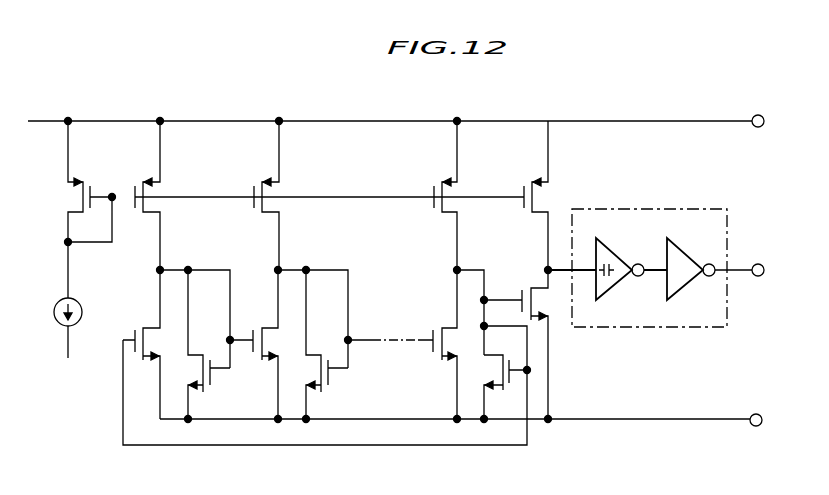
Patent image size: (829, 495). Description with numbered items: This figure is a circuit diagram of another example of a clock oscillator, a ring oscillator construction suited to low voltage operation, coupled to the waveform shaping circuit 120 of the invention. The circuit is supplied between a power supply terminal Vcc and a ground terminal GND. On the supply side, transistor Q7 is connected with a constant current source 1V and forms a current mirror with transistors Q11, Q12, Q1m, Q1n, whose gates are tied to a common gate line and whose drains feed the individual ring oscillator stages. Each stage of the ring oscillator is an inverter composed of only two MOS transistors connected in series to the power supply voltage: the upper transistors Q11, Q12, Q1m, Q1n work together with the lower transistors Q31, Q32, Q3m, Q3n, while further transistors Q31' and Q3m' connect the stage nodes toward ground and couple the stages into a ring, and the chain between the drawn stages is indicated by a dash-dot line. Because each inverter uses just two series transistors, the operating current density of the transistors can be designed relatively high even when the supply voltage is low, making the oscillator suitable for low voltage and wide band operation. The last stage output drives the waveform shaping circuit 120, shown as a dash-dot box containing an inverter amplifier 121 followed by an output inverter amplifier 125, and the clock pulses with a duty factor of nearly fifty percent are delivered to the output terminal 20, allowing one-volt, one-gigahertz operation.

The transistor Q7 is at (81, 208).
The transistor Q11 is at (133, 200).
The transistor Q12 is at (273, 213).
The transistor Q1m is at (441, 213).
The transistor Q1n is at (534, 213).
The transistor Q31 is at (134, 344).
The transistor Q31' is at (279, 375).
The transistor Q32 is at (262, 326).
The transistor Q3m is at (421, 344).
The transistor Q3m' is at (538, 407).
The transistor Q3n is at (531, 288).
The constant current source 1V is at (54, 304).
The waveform shaping circuit 120 is at (661, 207).
The inverter amplifier 121 is at (615, 253).
The output inverter amplifier 125 is at (691, 253).
The output terminal 20 is at (763, 265).
The power supply terminal Vcc is at (763, 116).
The ground terminal GND is at (761, 414).